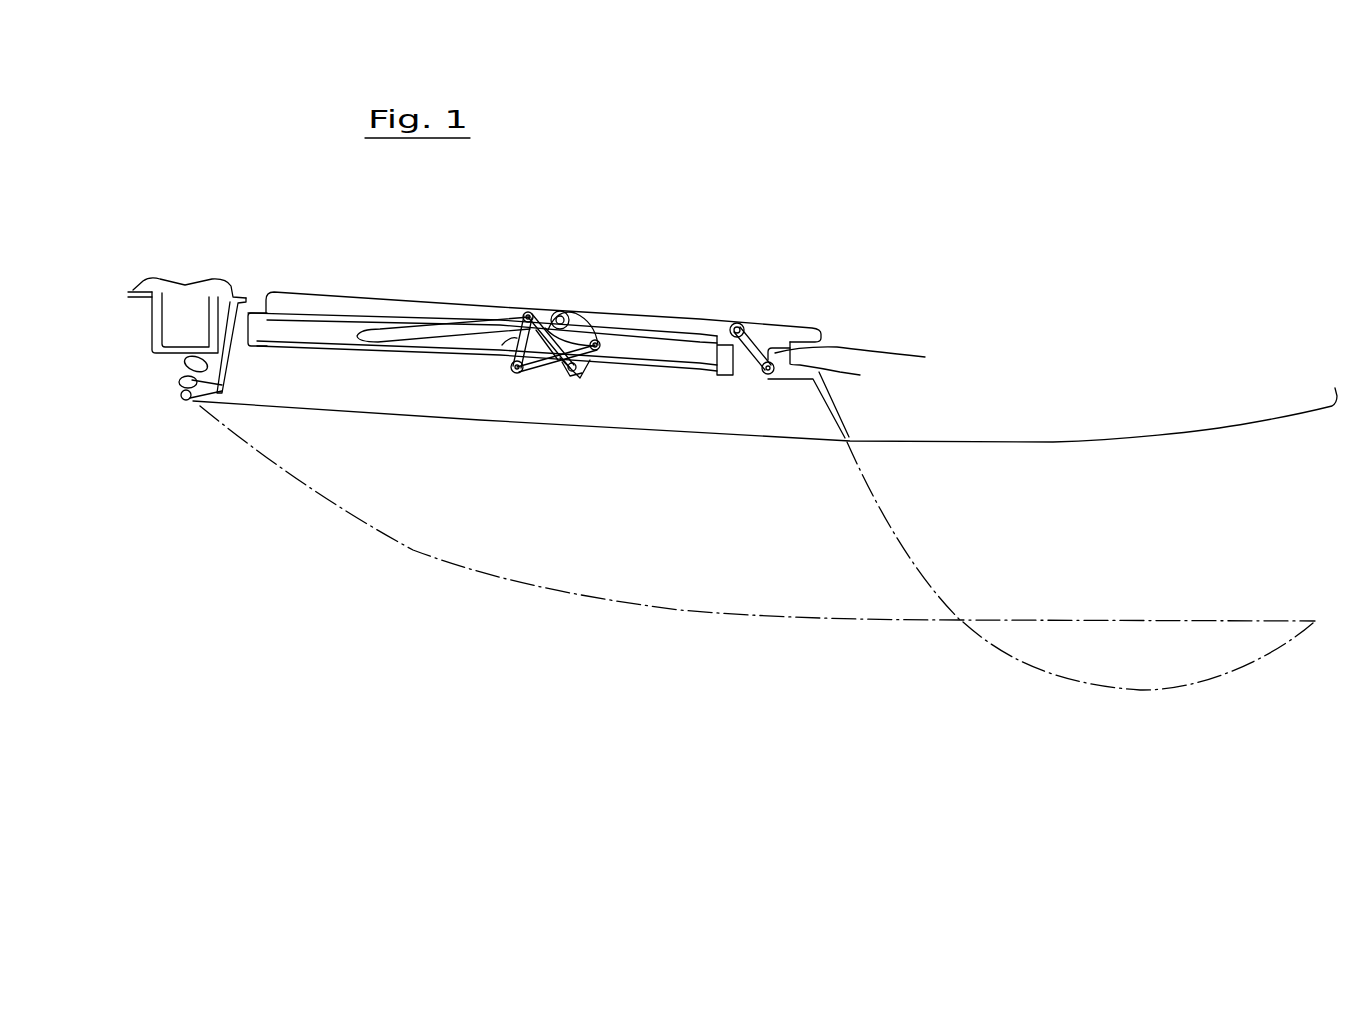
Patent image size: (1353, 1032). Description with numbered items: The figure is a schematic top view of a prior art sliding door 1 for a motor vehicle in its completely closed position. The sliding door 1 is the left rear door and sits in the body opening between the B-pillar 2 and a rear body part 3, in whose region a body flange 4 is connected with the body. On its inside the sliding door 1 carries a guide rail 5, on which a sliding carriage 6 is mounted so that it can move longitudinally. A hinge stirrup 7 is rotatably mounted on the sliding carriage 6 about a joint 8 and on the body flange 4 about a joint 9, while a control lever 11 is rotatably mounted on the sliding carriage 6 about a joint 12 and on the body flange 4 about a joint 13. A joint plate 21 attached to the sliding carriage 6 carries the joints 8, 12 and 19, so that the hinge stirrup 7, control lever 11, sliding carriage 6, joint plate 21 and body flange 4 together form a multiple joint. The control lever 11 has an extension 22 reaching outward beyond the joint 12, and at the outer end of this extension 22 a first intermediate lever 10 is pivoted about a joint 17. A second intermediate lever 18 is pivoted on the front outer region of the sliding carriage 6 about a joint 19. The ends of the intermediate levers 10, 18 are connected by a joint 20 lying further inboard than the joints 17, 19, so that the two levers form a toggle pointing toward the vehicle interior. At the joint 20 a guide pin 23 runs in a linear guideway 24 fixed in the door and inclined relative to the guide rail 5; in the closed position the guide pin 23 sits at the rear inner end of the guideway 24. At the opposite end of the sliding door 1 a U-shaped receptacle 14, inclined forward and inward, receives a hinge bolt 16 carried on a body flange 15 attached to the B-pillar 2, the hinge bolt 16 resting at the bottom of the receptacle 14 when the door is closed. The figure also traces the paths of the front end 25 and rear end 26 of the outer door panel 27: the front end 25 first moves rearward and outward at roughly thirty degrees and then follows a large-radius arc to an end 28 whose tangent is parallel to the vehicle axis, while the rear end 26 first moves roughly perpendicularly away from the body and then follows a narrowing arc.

The sliding door 1 is at (294, 226).
The B-pillar 2 is at (189, 284).
The rear body part 3 is at (850, 368).
The body flange 4 is at (770, 328).
The guide rail 5 is at (288, 335).
The sliding carriage 6 is at (655, 370).
The hinge stirrup 7 is at (618, 313).
The joint 8 is at (562, 310).
The joint 9 is at (740, 323).
The first intermediate lever 10 is at (559, 378).
The control lever 11 is at (728, 378).
The joint 12 is at (596, 358).
The joint 13 is at (770, 376).
The U-shaped receptacle 14 is at (180, 376).
The body flange 15 is at (193, 358).
The hinge bolt 16 is at (185, 402).
The joint 17 is at (579, 383).
The second intermediate lever 18 is at (502, 356).
The joint 19 is at (512, 382).
The joint 20 is at (528, 311).
The joint plate 21 is at (540, 382).
The extension 22 is at (574, 322).
The guide pin 23 is at (1313, 625).
The guideway 24 is at (460, 327).
The front end 25 is at (180, 399).
The rear end 26 is at (840, 436).
The outer door panel 27 is at (323, 412).
The end 28 is at (635, 607).